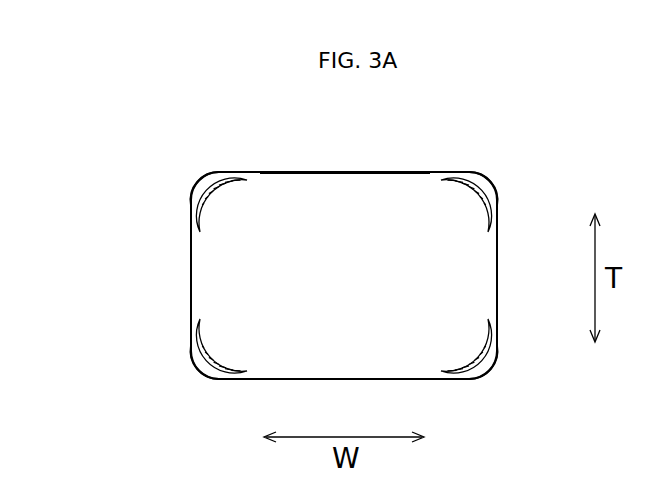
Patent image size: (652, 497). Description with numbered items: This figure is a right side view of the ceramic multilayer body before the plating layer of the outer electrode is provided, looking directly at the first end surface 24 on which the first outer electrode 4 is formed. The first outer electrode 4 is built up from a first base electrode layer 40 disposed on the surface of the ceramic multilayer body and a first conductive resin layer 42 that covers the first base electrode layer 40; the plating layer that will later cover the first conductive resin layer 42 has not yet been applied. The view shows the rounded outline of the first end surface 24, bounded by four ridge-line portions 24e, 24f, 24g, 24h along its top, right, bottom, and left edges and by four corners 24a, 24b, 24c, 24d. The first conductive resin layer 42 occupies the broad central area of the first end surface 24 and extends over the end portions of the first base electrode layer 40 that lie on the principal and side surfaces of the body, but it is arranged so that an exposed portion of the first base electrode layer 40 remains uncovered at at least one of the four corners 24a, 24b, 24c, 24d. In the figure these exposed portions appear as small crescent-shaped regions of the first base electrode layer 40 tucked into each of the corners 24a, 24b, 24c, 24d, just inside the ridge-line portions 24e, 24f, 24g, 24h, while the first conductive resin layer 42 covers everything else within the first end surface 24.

The first outer electrode 4 is at (419, 170).
The first end surface 24 is at (278, 218).
The corner 24a is at (198, 187).
The corner 24b is at (485, 180).
The corner 24c is at (490, 367).
The corner 24d is at (200, 368).
The ridge-line portion 24e is at (310, 172).
The ridge-line portion 24f is at (498, 281).
The ridge-line portion 24g is at (320, 380).
The ridge-line portion 24h is at (190, 278).
The first base electrode layer 40 is at (210, 198).
The first conductive resin layer 42 is at (363, 220).